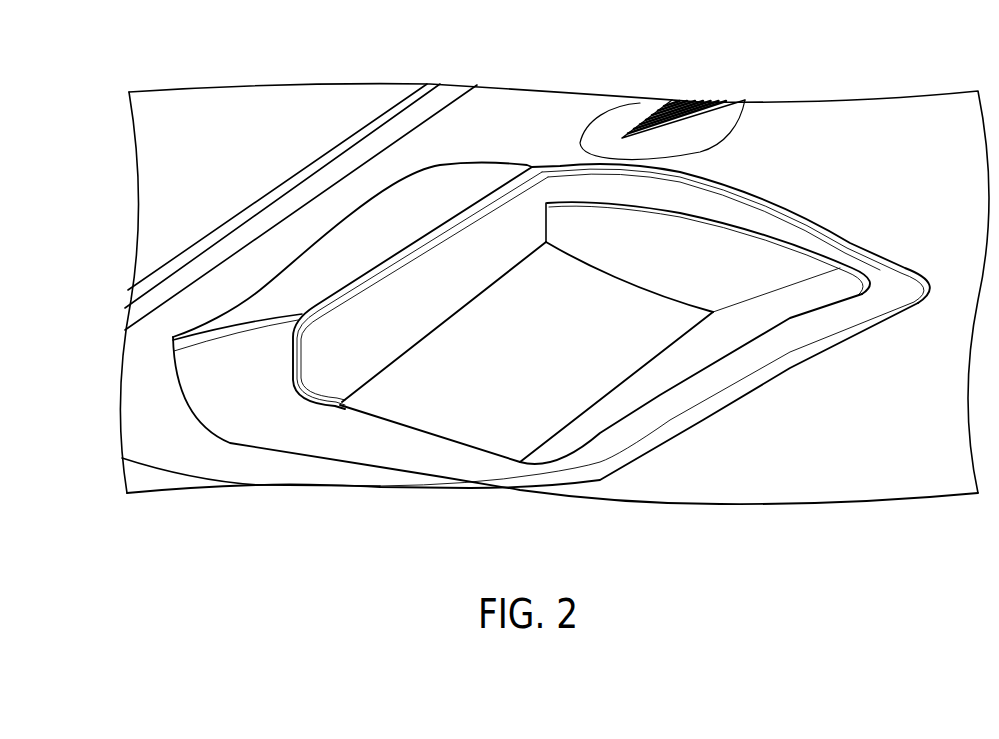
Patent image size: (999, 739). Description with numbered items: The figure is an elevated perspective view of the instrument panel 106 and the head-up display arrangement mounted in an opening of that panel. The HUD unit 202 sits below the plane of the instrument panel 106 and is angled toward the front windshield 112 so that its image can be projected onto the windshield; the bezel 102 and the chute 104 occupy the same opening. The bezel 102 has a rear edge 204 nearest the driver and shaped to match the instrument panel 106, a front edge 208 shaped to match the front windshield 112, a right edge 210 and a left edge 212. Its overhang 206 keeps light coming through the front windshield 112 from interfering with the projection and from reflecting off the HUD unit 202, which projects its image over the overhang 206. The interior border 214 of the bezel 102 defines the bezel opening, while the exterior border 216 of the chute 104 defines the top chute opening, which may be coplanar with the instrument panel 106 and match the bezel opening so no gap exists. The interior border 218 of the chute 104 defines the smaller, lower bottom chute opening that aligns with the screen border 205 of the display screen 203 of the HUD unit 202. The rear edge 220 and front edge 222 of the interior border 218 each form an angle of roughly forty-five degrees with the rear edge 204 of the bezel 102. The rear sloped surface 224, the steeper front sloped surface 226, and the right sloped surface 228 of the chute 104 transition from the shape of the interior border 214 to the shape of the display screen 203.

The bezel 102 is at (915, 277).
The chute 104 is at (775, 267).
The instrument panel 106 is at (852, 483).
The front windshield 112 is at (228, 103).
The HUD unit 202 is at (505, 430).
The display screen 203 is at (425, 415).
The rear edge 204 is at (730, 405).
The screen border 205 is at (580, 403).
The overhang 206 is at (481, 168).
The front edge 208 is at (367, 195).
The right edge 210 is at (752, 193).
The left edge 212 is at (332, 440).
The interior border 214 is at (667, 173).
The exterior border 216 is at (774, 210).
The interior border 218 is at (585, 233).
The rear edge 220 is at (773, 313).
The front edge 222 is at (392, 362).
The rear sloped surface 224 is at (692, 330).
The front sloped surface 226 is at (417, 317).
The right sloped surface 228 is at (675, 232).